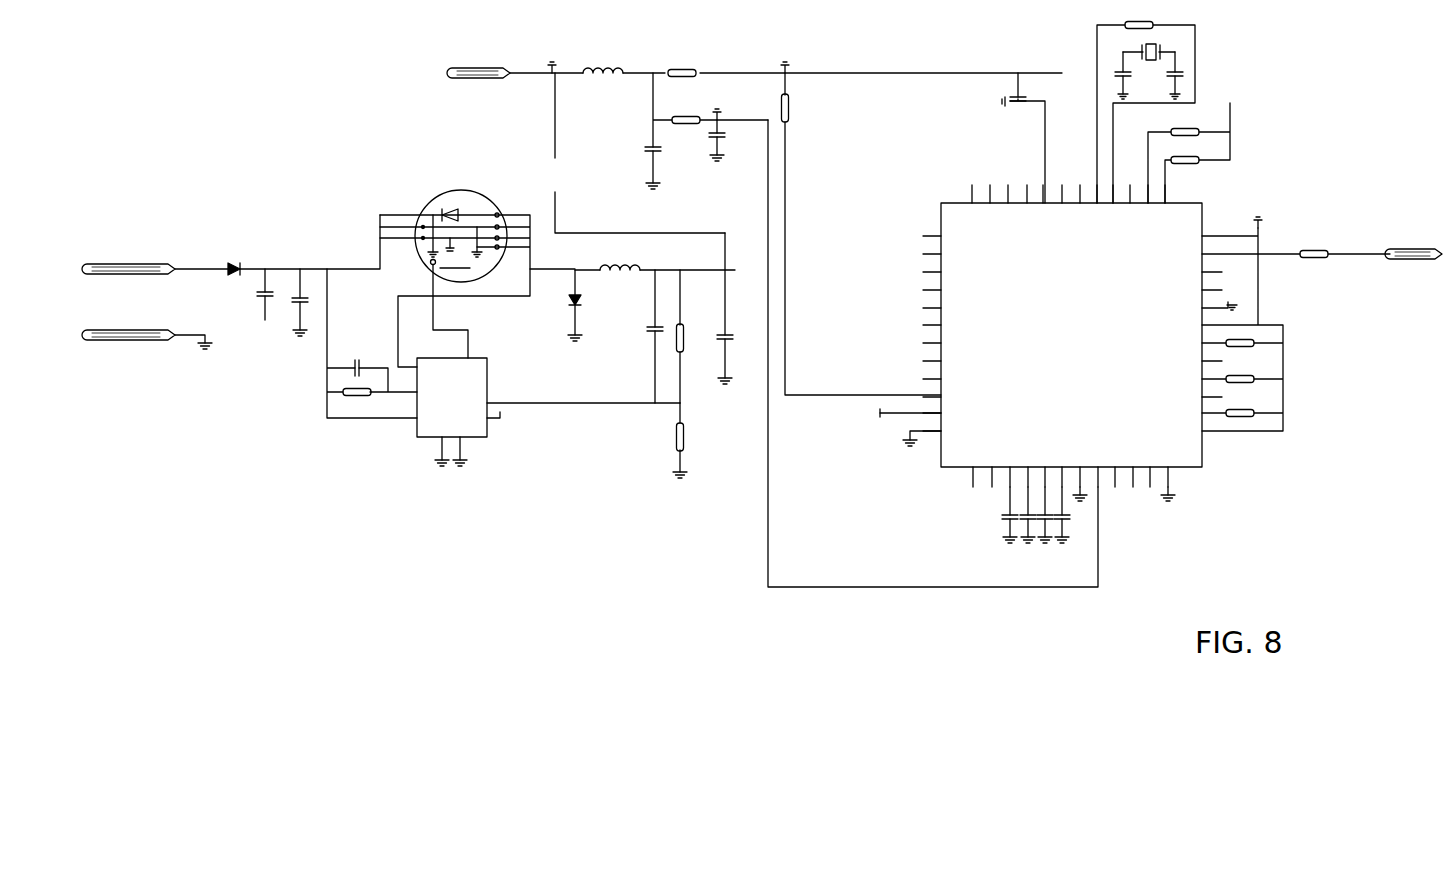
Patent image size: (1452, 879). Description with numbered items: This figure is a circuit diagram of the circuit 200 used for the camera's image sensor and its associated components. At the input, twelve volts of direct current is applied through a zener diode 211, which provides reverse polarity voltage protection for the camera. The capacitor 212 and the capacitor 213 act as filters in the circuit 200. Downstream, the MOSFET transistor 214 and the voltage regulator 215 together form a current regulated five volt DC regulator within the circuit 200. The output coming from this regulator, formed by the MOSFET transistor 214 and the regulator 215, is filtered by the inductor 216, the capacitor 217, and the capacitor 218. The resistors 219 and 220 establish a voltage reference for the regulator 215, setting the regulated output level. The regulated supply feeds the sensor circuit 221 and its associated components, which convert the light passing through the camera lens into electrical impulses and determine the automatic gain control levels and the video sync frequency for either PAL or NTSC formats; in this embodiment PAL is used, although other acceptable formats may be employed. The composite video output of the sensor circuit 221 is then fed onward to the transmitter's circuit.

The circuit 200 is at (556, 545).
The zener diode 211 is at (235, 268).
The capacitor 212 is at (265, 330).
The capacitor 213 is at (302, 333).
The MOSFET transistor 214 is at (433, 200).
The voltage regulator 215 is at (490, 372).
The inductor 216 is at (597, 248).
The capacitor 217 is at (652, 330).
The capacitor 218 is at (747, 337).
The resistor 219 is at (685, 330).
The resistor 220 is at (685, 437).
The sensor circuit 221 is at (1200, 203).